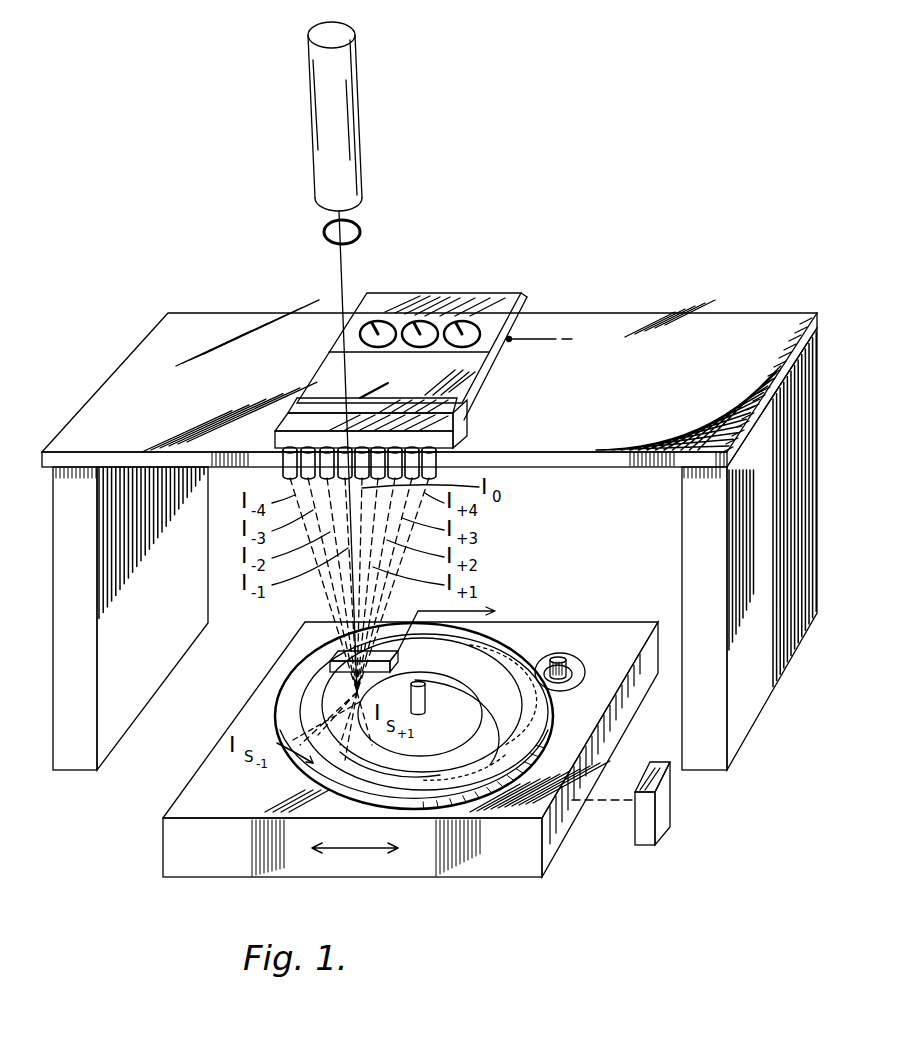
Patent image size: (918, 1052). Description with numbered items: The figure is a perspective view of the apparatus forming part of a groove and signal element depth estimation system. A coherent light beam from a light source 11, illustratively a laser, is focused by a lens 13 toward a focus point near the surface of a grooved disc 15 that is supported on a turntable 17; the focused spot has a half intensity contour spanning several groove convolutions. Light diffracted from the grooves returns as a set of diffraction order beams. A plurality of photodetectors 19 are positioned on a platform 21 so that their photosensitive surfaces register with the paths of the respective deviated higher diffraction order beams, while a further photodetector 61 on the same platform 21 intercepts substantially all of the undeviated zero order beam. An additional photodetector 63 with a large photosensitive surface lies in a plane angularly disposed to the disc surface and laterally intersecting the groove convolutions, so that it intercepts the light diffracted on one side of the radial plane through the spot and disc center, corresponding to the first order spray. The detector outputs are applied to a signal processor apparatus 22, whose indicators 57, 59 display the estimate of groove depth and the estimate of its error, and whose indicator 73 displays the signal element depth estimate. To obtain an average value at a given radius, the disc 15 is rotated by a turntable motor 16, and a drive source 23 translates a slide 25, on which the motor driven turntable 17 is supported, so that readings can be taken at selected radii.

The light source 11 is at (360, 97).
The lens 13 is at (360, 231).
The grooved disc 15 is at (505, 665).
The turntable motor 16 is at (572, 674).
The turntable 17 is at (300, 773).
The photodetectors 19 is at (429, 450).
The platform 21 is at (467, 427).
The signal processor apparatus 22 is at (482, 339).
The drive source 23 is at (657, 838).
The slide 25 is at (349, 860).
The indicator 57 is at (421, 321).
The indicator 59 is at (374, 321).
The photodetector 61 is at (352, 410).
The photodetector 63 is at (398, 664).
The indicator 73 is at (468, 321).